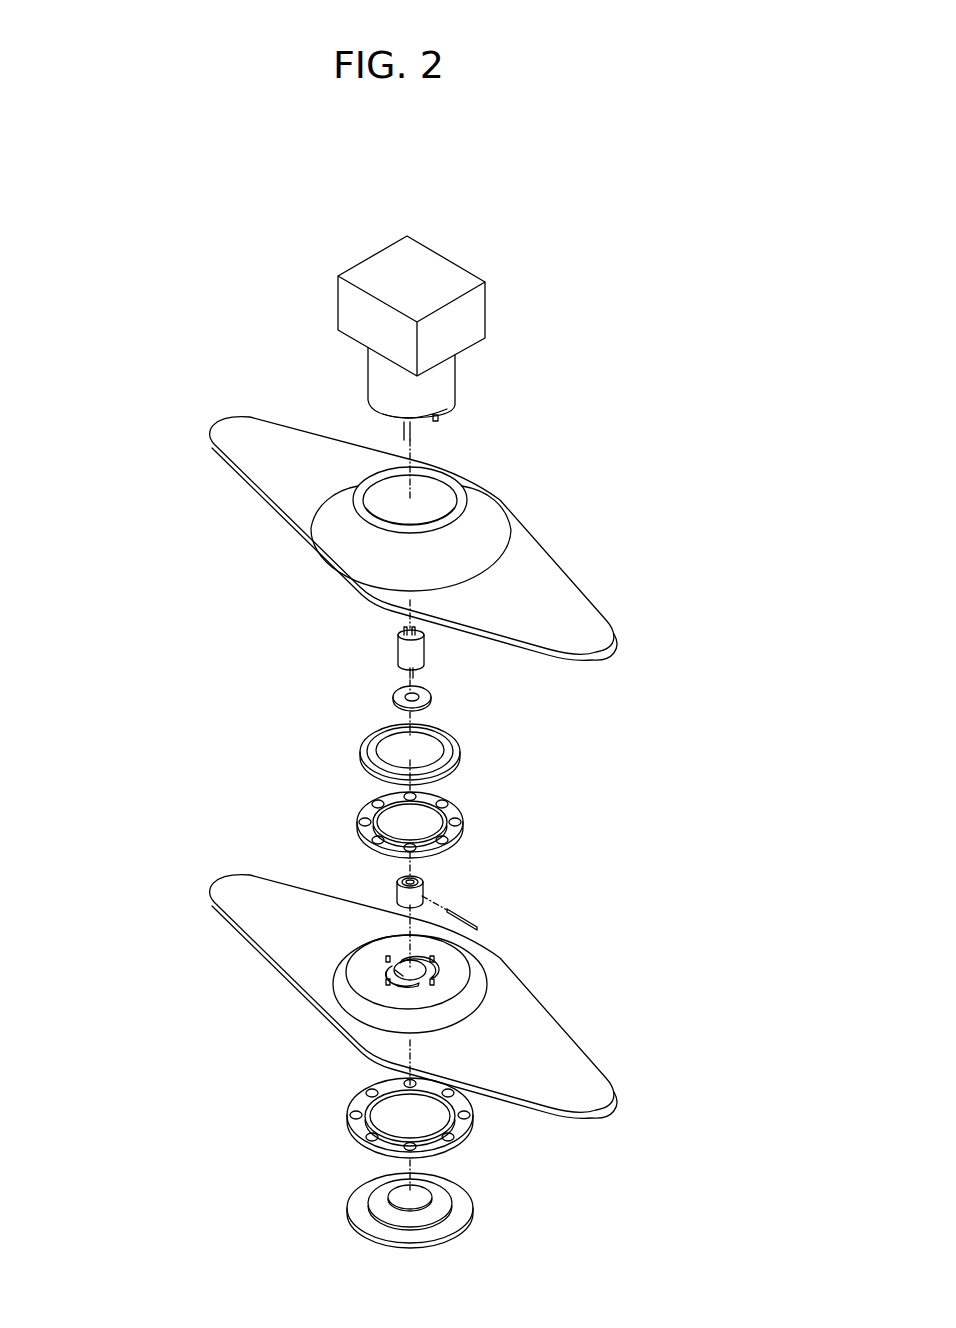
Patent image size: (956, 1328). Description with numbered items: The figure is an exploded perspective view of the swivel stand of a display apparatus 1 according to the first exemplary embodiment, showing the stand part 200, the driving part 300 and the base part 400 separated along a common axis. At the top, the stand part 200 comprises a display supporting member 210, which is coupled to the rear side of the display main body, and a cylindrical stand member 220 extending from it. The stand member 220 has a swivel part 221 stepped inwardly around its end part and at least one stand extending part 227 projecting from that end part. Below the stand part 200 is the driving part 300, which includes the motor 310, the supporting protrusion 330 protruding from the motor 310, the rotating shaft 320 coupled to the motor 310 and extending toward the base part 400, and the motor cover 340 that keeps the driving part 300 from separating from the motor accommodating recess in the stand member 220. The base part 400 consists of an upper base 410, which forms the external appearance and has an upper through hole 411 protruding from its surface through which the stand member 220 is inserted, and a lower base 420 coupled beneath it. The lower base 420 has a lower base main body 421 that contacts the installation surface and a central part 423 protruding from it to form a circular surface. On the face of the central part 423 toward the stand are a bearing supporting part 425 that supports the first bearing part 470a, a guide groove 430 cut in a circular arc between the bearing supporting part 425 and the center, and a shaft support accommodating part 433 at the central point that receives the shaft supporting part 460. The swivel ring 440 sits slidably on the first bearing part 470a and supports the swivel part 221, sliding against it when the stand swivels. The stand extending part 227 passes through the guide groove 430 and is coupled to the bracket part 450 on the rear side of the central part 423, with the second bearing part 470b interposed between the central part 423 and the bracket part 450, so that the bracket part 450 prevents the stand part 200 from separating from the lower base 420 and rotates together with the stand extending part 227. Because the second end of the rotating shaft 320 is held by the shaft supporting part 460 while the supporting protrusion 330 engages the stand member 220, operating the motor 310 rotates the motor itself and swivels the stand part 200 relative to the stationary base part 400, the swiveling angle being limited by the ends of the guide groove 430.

The display apparatus 1 is at (231, 267).
The stand part 200 is at (563, 326).
The display supporting member 210 is at (485, 320).
The stand member 220 is at (455, 363).
The swivel part 221 is at (448, 410).
The stand extending part 227 is at (412, 430).
The driving part 300 is at (298, 613).
The motor 310 is at (398, 645).
The rotating shaft 320 is at (408, 673).
The supporting protrusion 330 is at (400, 630).
The motor cover 340 is at (393, 698).
The base part 400 is at (91, 450).
The upper base 410 is at (217, 446).
The upper through hole 411 is at (433, 495).
The lower base 420 is at (145, 922).
The lower base main body 421 is at (232, 922).
The central part 423 is at (360, 983).
The bearing supporting part 425 is at (437, 980).
The guide groove 430 is at (437, 958).
The shaft support accommodating part 433 is at (402, 978).
The swivel ring 440 is at (461, 751).
The bracket part 450 is at (347, 1209).
The shaft supporting part 460 is at (425, 882).
The first bearing part 470a is at (463, 826).
The second bearing part 470b is at (347, 1123).